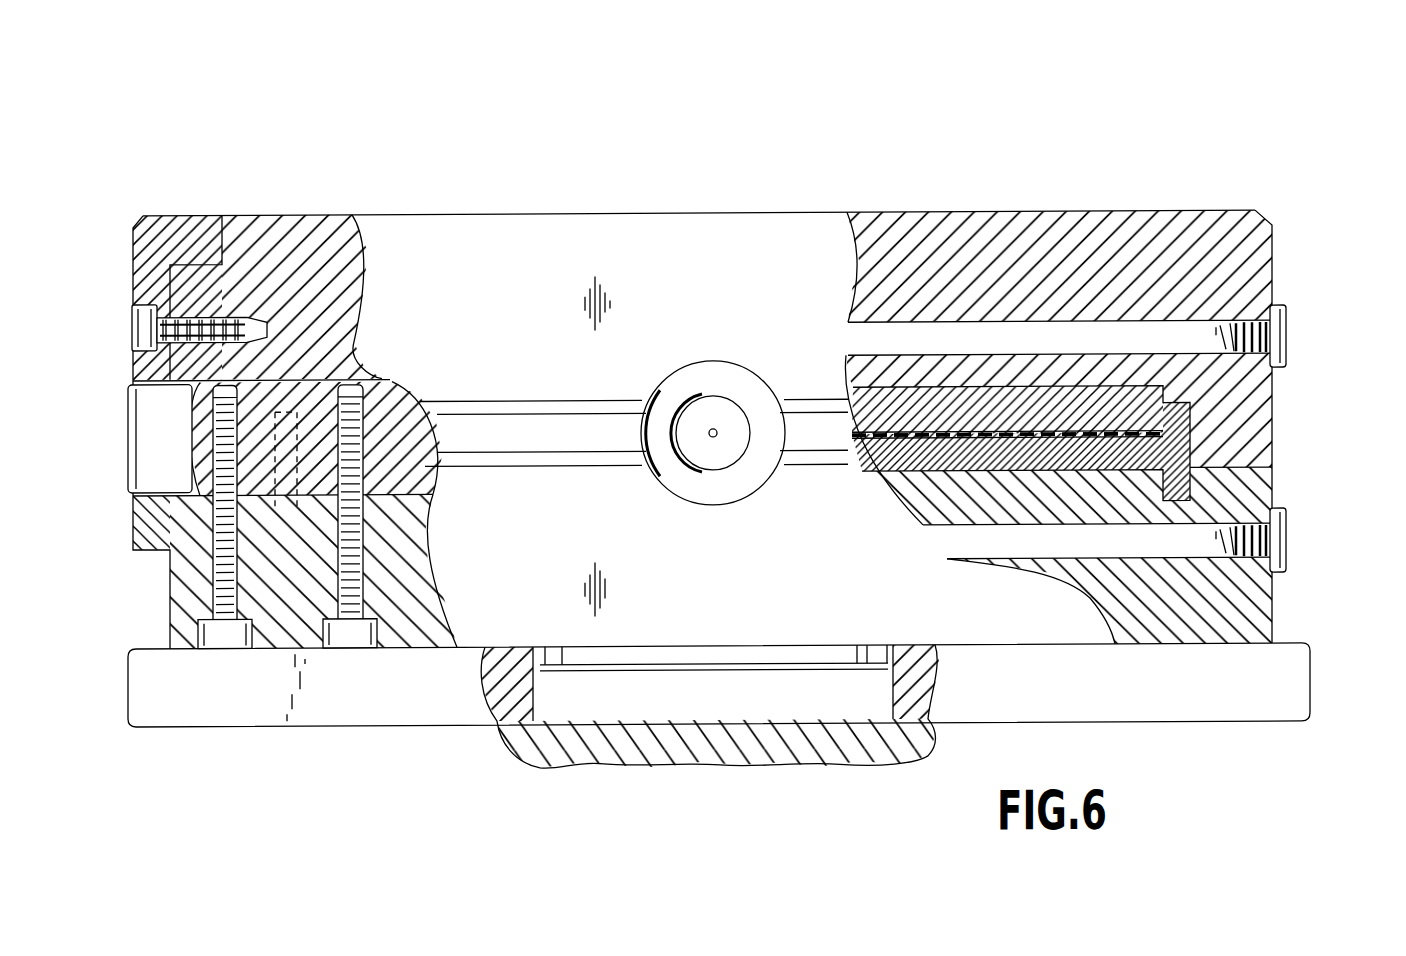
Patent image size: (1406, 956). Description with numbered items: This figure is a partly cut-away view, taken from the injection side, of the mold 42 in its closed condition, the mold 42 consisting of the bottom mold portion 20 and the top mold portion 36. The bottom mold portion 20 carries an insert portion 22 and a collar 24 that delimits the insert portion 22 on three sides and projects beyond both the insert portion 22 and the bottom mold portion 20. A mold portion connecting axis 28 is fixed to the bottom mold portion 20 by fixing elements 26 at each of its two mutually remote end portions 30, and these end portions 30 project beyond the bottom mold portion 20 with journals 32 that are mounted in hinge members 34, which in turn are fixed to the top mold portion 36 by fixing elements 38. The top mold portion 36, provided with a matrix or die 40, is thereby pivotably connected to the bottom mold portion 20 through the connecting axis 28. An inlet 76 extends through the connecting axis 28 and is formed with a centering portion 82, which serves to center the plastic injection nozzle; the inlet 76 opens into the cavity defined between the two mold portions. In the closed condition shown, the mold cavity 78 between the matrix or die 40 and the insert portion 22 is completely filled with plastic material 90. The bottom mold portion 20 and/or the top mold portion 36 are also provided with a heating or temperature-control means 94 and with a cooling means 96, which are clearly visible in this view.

The bottom mold portion 20 is at (500, 580).
The insert portion 22 is at (1040, 460).
The collar 24 is at (1240, 470).
The fixing elements 26 is at (362, 588).
The mold portion connecting axis 28 is at (432, 408).
The end portions 30 is at (290, 388).
The journals 32 is at (153, 460).
The hinge member 34 is at (166, 262).
The top mold portion 36 is at (480, 275).
The fixing elements 38 is at (234, 268).
The matrix or die 40 is at (990, 400).
The mold 42 is at (1222, 150).
The inlet 76 is at (722, 418).
The mold cavity 78 is at (917, 440).
The centering portion 82 is at (698, 455).
The plastic material 90 is at (1007, 435).
The heating or temperature-control means 94 is at (1243, 310).
The cooling means 96 is at (1241, 439).